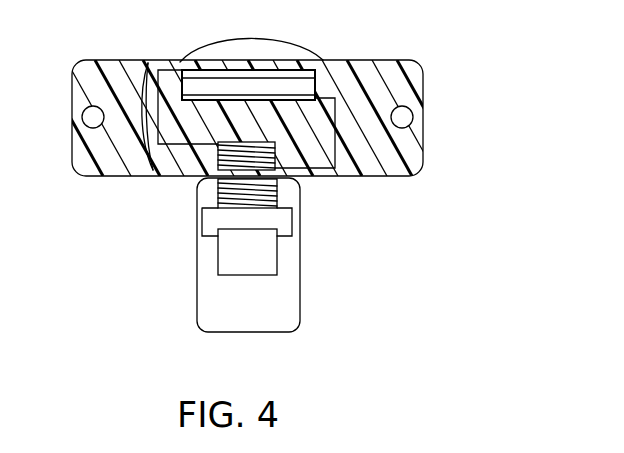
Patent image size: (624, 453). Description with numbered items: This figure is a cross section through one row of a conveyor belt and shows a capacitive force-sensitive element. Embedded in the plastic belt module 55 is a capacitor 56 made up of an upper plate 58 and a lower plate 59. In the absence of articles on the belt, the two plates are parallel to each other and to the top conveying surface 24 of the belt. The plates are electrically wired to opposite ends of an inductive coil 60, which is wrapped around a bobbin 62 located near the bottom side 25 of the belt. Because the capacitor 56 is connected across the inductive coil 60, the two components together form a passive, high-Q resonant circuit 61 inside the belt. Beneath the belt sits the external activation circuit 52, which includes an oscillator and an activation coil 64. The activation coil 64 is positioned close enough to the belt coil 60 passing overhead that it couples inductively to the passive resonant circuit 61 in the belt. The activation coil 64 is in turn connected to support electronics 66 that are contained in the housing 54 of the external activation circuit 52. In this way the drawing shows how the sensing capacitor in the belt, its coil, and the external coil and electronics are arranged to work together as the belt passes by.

The top conveying surface 24 is at (386, 62).
The plastic belt module 55 is at (410, 72).
The bottom side 25 is at (110, 177).
The capacitor 56 is at (314, 68).
The upper plate 58 is at (179, 62).
The lower plate 59 is at (188, 102).
The passive resonant circuit 61 is at (145, 118).
The inductive coil 60 is at (275, 157).
The bobbin 62 is at (275, 142).
The activation coil 64 is at (277, 193).
The support electronics 66 is at (275, 260).
The housing 54 is at (292, 318).
The external activation circuit 52 is at (192, 183).